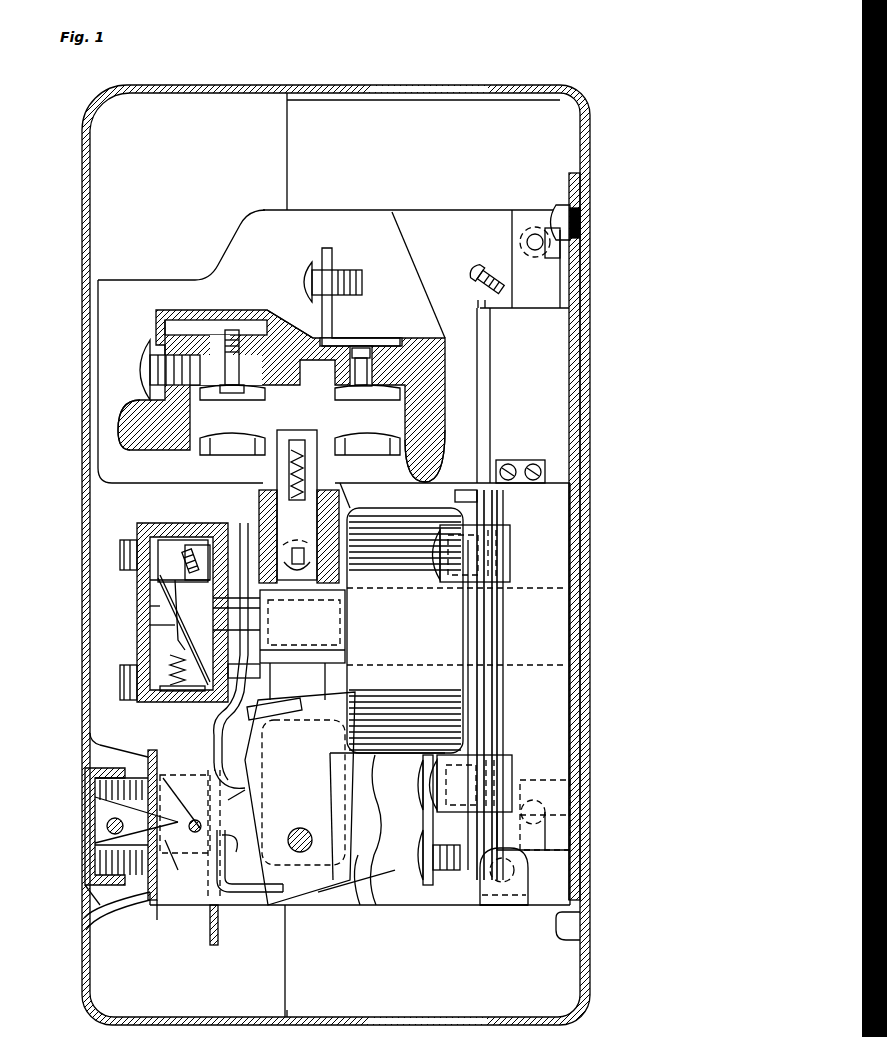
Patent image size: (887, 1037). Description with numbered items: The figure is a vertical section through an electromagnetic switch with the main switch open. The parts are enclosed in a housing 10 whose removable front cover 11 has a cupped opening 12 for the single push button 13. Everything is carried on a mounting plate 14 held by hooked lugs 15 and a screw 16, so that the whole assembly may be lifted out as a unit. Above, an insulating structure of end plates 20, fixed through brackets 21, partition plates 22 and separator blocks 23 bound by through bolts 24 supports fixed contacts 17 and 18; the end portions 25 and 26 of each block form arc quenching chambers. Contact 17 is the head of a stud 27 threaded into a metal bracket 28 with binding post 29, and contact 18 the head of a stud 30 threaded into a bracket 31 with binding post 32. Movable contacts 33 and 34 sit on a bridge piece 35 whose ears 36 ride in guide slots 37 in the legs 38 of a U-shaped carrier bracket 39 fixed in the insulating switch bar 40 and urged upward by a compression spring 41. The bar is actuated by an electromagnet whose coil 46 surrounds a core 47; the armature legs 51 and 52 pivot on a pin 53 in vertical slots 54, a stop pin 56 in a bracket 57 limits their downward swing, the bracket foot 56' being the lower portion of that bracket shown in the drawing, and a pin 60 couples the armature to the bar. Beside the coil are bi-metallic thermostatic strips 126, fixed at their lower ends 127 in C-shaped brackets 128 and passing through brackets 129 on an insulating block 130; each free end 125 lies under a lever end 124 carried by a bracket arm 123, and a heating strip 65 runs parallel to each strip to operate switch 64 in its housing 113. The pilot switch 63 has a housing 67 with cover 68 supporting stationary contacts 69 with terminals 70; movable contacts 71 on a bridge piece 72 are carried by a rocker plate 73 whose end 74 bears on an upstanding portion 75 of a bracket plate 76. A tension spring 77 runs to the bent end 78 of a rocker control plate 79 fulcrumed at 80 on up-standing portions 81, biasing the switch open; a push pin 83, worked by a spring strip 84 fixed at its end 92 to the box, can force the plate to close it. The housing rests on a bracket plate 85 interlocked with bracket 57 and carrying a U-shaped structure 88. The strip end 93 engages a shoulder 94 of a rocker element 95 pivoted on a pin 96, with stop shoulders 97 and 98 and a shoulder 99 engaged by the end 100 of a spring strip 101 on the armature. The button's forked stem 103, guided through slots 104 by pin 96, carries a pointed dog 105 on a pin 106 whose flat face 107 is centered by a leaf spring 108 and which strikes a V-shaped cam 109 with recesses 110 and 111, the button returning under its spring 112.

The housing 10 is at (520, 86).
The front cover 11 is at (82, 218).
The cupped opening 12 is at (128, 910).
The push-button control element 13 is at (88, 872).
The mounting plate 14 is at (575, 332).
The hooked lugs 15 is at (590, 932).
The screw 16 is at (558, 207).
The contact member 17 is at (225, 400).
The contact member 18 is at (355, 400).
The end plates 20 is at (445, 215).
The brackets 21 is at (548, 292).
The partition plates 22 is at (352, 210).
The separator blocks 23 is at (296, 325).
The through bolts 24 is at (260, 310).
The end portion 25 is at (110, 440).
The end portion 26 is at (438, 470).
The stud 27 is at (222, 328).
The metal bracket 28 is at (175, 318).
The binding post 29 is at (138, 348).
The stud 30 is at (362, 346).
The metal bracket 31 is at (338, 336).
The binding post 32 is at (300, 270).
The movable contact 33 is at (232, 438).
The movable contact 34 is at (365, 438).
The bridge piece 35 is at (280, 432).
The ears 36 is at (300, 440).
The guide slots 37 is at (306, 478).
The legs 38 is at (270, 472).
The carrier bracket 39 is at (343, 510).
The movable switch bar 40 is at (347, 560).
The compression spring 41 is at (296, 545).
The coil 46 is at (352, 680).
The core 47 is at (330, 620).
The armature leg 51 is at (333, 756).
The armature leg 52 is at (366, 906).
The pin 53 is at (548, 812).
The vertical slots 54 is at (552, 828).
The stop pin 56 is at (473, 830).
The bracket foot 56' is at (506, 923).
The bracket 57 is at (278, 908).
The pin 60 is at (312, 840).
The pilot switch 63 is at (137, 585).
The switch 64 is at (575, 415).
The heating strip 65 is at (465, 631).
The pilot switch housing 67 is at (262, 612).
The cover 68 is at (137, 612).
The stationary contacts 69 is at (165, 540).
The terminal 70 is at (120, 552).
The movable contacts 71 is at (185, 542).
The bridge piece 72 is at (195, 542).
The rocker plate 73 is at (137, 626).
The fulcrumed end 74 is at (150, 650).
The upstanding portion 75 is at (190, 690).
The bracket plate 76 is at (260, 602).
The tension spring 77 is at (180, 640).
The bent end 78 is at (170, 702).
The rocker control plate 79 is at (262, 632).
The fulcrum 80 is at (137, 596).
The up-standing portions 81 is at (182, 612).
The push pin 83 is at (250, 676).
The spring strip 84 is at (262, 657).
The bracket plate 85 is at (252, 715).
The U-shaped structure 88 is at (152, 908).
The strip end 92 is at (246, 540).
The strip end 93 is at (222, 745).
The shoulder 94 is at (230, 770).
The rocker element 95 is at (238, 800).
The pivot pin 96 is at (202, 826).
The stop shoulder 97 is at (160, 906).
The stop shoulder 98 is at (157, 758).
The shoulder 99 is at (228, 845).
The strip end 100 is at (255, 893).
The spring strip 101 is at (322, 900).
The forked stem 103 is at (90, 775).
The guide slots 104 is at (150, 818).
The pointed dog 105 is at (95, 806).
The pin 106 is at (98, 828).
The flat face 107 is at (90, 846).
The leaf spring 108 is at (95, 797).
The V-shaped cam 109 is at (200, 812).
The recess 110 is at (176, 860).
The recess 111 is at (172, 790).
The spring 112 is at (86, 896).
The housing 113 is at (570, 370).
The bracket arm 123 is at (520, 462).
The lever end 124 is at (455, 496).
The free end 125 is at (500, 510).
The thermostatic strip 126 is at (498, 632).
The lower end 127 is at (520, 780).
The C-shaped bracket 128 is at (492, 765).
The C-shaped bracket 129 is at (505, 556).
The insulating block 130 is at (575, 675).